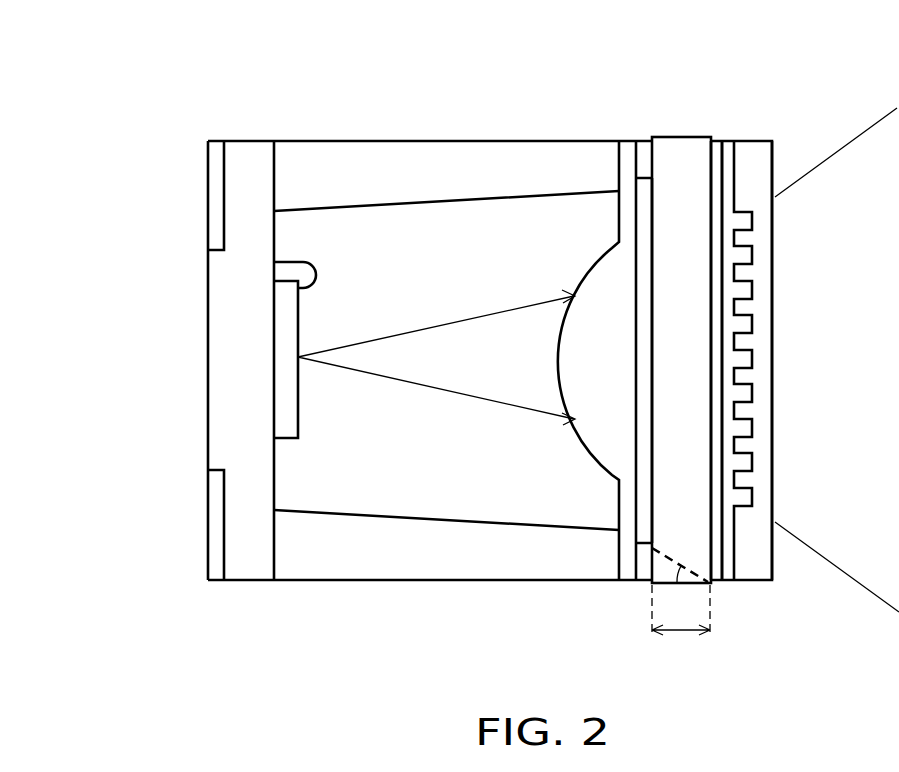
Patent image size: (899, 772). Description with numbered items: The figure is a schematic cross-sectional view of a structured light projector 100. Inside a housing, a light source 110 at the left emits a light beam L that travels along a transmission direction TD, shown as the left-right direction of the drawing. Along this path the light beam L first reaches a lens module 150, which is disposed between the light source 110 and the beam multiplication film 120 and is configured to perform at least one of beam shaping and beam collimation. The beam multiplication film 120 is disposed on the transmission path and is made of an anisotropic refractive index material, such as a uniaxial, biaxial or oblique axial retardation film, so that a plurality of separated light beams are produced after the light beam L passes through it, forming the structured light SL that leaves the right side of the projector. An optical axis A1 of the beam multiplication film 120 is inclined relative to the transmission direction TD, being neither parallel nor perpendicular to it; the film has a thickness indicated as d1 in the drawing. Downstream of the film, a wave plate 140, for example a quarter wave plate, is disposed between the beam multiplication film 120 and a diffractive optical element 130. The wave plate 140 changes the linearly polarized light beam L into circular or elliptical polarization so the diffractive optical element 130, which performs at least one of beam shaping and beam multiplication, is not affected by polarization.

The structured light projector 100 is at (182, 620).
The light source 110 is at (288, 430).
The beam multiplication film 120 is at (672, 150).
The diffractive optical element 130 is at (755, 150).
The wave plate 140 is at (717, 150).
The lens module 150 is at (632, 152).
The light beam L is at (440, 390).
The transmission direction TD is at (357, 80).
The structured light SL is at (897, 108).
The distance d1 is at (681, 626).
The optical axis A1 is at (672, 580).